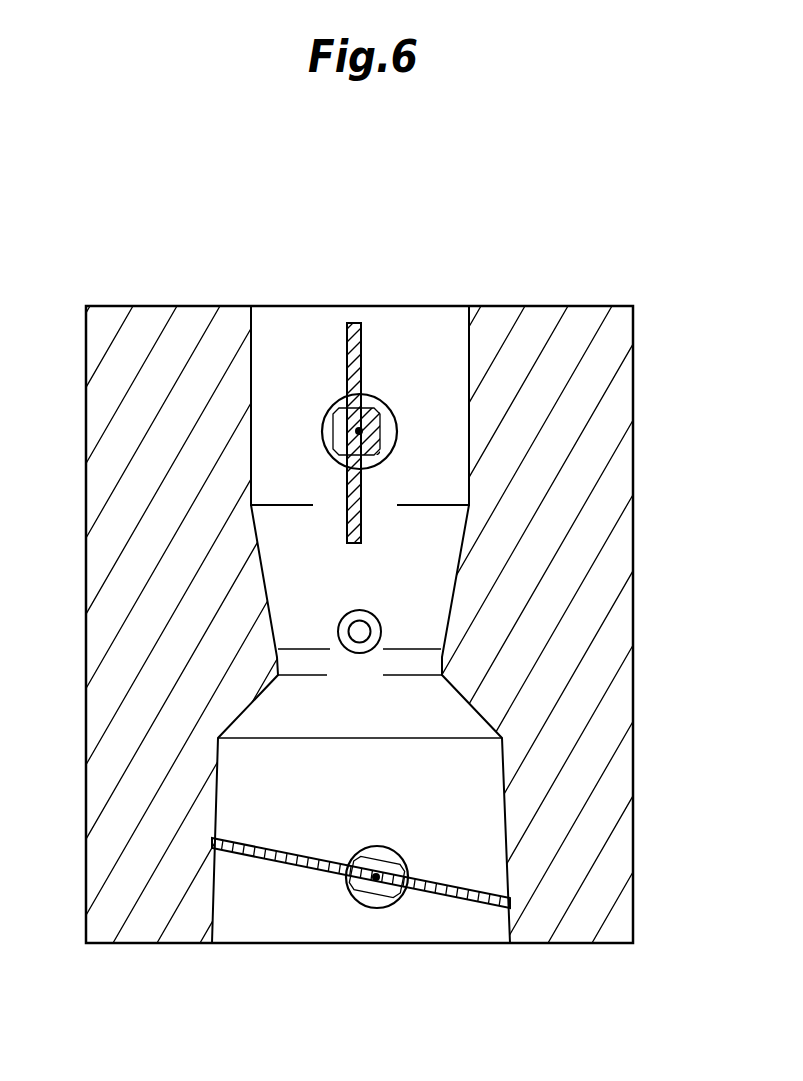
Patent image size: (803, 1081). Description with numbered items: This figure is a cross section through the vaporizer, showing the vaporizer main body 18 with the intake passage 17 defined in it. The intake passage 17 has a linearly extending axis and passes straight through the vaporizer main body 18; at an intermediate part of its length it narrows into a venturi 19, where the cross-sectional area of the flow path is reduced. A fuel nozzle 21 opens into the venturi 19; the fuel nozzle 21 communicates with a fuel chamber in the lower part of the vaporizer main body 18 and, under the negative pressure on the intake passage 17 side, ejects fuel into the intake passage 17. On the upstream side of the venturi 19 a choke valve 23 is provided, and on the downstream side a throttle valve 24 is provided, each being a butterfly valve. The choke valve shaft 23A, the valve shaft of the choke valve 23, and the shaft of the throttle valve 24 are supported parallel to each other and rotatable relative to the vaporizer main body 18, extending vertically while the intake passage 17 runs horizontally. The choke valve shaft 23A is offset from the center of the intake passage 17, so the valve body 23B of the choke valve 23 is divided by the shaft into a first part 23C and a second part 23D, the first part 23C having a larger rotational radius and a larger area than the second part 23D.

The intake passage 17 is at (508, 863).
The vaporizer main body 18 is at (95, 647).
The venturi 19 is at (442, 657).
The fuel nozzle 21 is at (370, 621).
The choke valve 23 is at (326, 882).
The choke valve shaft 23A is at (377, 898).
The valve body 23B is at (427, 893).
The first part 23C is at (265, 857).
The second part 23D is at (500, 912).
The throttle valve 24 is at (347, 345).